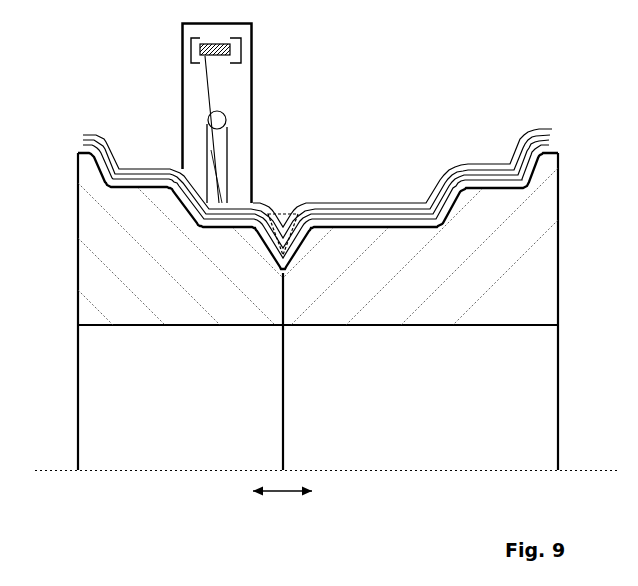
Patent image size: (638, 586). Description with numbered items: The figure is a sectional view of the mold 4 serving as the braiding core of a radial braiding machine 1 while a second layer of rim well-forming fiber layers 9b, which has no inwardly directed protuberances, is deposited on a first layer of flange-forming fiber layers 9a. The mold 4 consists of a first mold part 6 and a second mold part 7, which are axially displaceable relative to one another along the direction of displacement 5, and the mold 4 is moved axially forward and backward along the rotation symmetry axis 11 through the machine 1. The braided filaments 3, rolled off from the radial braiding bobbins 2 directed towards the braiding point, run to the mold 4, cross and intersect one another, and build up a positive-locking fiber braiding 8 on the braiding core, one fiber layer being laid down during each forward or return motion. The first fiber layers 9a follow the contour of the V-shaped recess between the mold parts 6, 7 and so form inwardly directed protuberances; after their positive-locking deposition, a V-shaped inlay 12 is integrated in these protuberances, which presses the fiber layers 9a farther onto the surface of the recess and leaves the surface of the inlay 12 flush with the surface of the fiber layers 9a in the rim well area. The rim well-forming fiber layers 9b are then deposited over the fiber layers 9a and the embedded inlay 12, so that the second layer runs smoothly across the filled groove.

The radial braiding machine 1 is at (256, 78).
The radial braiding bobbins 2 is at (191, 47).
The braided filaments 3 is at (205, 90).
The multipart mold 4 is at (315, 311).
The first mold part 6 is at (90, 221).
The second mold part 7 is at (544, 213).
The positive-locking fiber braiding 8 is at (318, 193).
The flange-forming fiber layers 9a is at (316, 194).
The rim well-forming fiber layers 9b is at (446, 165).
The rotation symmetry axis 11 is at (583, 470).
The V-shaped inlay 12 is at (284, 214).
The direction of displacement 5 is at (282, 508).